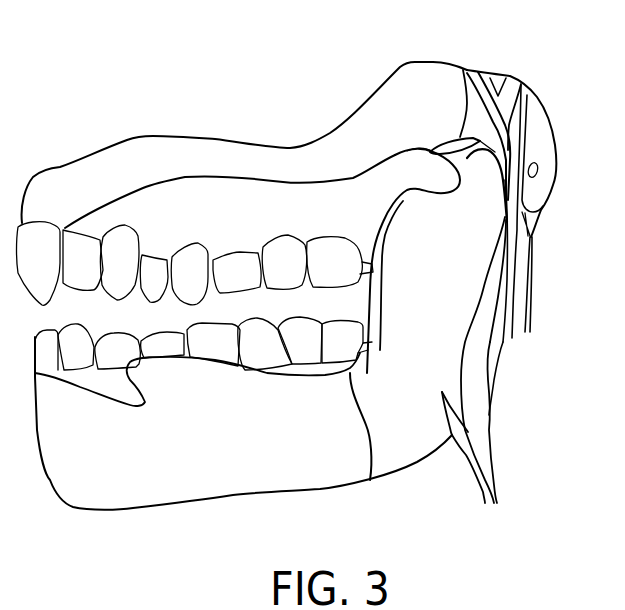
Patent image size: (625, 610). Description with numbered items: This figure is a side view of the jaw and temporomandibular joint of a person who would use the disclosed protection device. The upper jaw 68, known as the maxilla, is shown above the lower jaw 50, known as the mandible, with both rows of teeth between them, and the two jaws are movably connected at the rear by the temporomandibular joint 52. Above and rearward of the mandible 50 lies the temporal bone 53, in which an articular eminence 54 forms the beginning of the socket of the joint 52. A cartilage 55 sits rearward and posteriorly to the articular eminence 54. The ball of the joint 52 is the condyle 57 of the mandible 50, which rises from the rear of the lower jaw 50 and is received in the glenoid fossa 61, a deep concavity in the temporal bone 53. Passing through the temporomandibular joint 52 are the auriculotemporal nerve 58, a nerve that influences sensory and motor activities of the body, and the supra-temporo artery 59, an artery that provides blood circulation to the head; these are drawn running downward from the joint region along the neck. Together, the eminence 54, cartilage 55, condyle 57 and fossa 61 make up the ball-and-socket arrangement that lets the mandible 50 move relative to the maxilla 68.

The lower jaw 50 is at (165, 497).
The temporomandibular joint 52 is at (443, 175).
The temporal bone 53 is at (433, 132).
The articular eminence 54 is at (427, 143).
The cartilage 55 is at (480, 148).
The condyle 57 is at (472, 168).
The auriculotemporal nerve 58 is at (500, 76).
The supra-temporo artery 59 is at (488, 470).
The glenoid fossa 61 is at (458, 132).
The upper jaw 68 is at (148, 147).